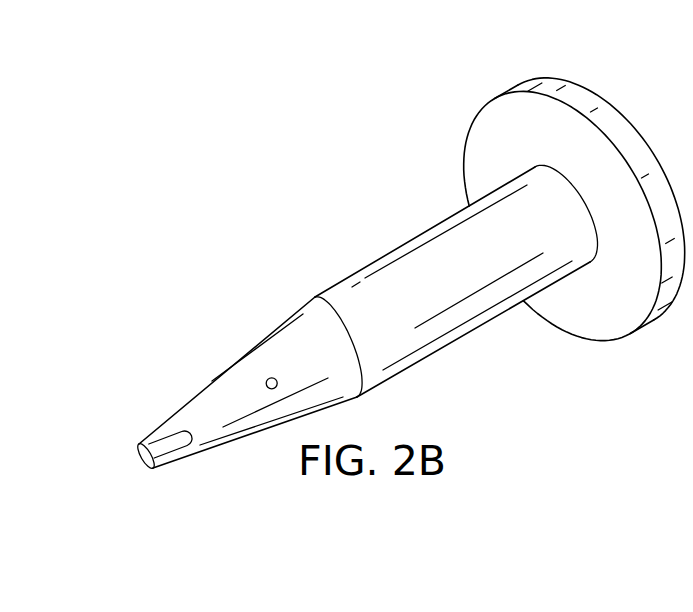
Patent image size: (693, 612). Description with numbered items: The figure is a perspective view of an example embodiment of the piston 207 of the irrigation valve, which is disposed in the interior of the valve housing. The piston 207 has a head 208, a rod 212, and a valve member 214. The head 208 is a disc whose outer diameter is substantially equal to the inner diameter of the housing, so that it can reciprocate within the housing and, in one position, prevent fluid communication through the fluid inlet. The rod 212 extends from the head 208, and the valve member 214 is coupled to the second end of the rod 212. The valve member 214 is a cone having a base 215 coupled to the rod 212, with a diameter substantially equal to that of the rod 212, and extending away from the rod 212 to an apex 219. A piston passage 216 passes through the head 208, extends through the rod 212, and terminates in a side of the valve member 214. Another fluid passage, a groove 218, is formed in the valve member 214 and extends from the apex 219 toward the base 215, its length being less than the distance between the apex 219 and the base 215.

The piston 207 is at (322, 188).
The head 208 is at (618, 140).
The rod 212 is at (470, 333).
The valve member 214 is at (212, 381).
The base 215 is at (315, 297).
The piston passage 216 is at (278, 379).
The groove 218 is at (157, 452).
The apex 219 is at (142, 465).